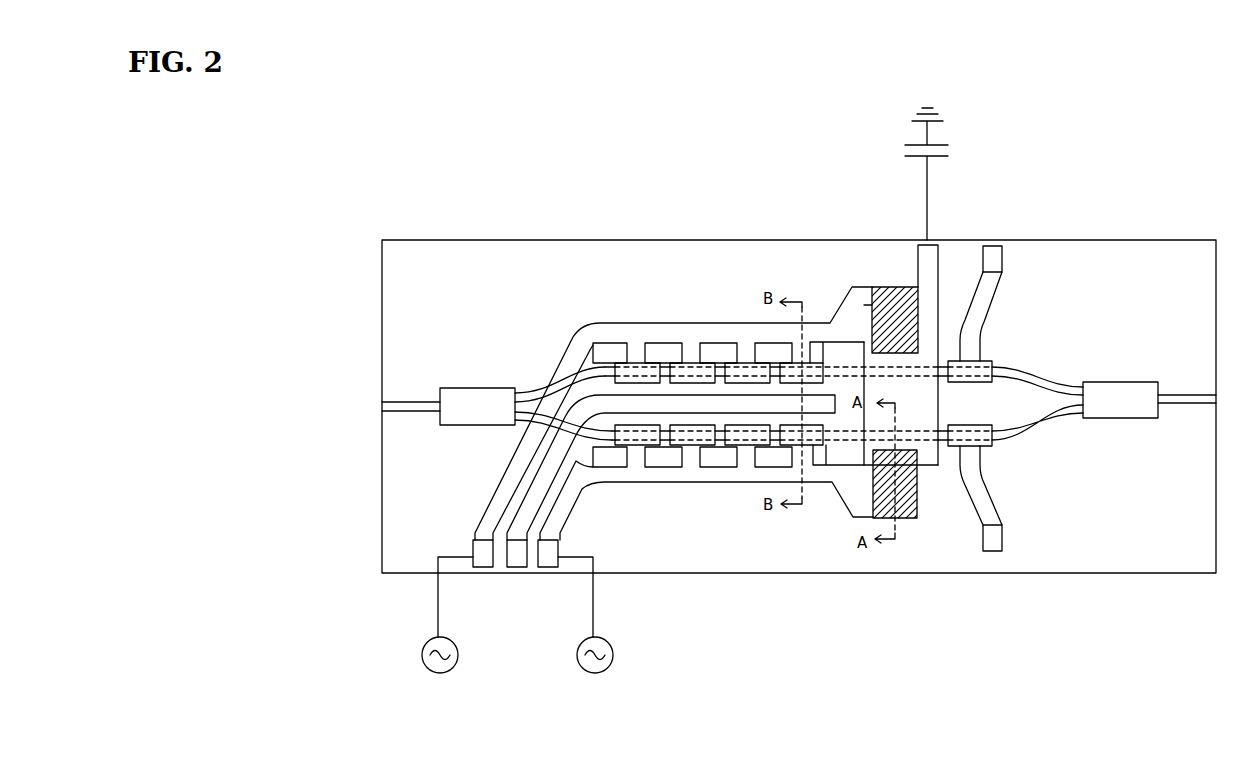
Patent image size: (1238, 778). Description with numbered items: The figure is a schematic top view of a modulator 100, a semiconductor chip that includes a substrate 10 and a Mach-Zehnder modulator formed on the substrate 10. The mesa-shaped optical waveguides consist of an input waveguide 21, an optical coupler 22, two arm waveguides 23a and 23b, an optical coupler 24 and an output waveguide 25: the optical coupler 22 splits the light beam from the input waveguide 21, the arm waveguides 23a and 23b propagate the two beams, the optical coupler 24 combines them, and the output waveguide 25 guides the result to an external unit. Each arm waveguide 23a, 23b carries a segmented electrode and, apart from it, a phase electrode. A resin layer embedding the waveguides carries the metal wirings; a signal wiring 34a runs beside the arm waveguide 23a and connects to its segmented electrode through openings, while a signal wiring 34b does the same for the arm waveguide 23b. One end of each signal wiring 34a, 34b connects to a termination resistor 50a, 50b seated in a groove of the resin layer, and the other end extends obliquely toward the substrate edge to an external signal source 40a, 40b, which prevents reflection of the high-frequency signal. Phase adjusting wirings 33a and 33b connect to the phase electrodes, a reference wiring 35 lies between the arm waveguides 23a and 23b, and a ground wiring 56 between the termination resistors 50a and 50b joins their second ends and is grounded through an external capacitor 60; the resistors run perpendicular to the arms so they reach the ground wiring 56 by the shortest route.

The substrate 10 is at (1175, 548).
The modulator 100 is at (1078, 193).
The input waveguide 21 is at (415, 398).
The optical coupler 22 is at (478, 392).
The arm waveguide 23a is at (596, 342).
The arm waveguide 23b is at (826, 470).
The optical coupler 24 is at (1106, 385).
The output waveguide 25 is at (1188, 393).
The phase adjusting wiring 33a is at (1003, 290).
The phase adjusting wiring 33b is at (1008, 520).
The signal wiring 34a is at (634, 350).
The signal wiring 34b is at (673, 470).
The reference wiring 35 is at (545, 460).
The external signal source 40a is at (440, 673).
The external signal source 40b is at (595, 673).
The termination resistor 50a is at (900, 292).
The termination resistor 50b is at (918, 490).
The ground wiring 56 is at (945, 242).
The external capacitor 60 is at (907, 146).